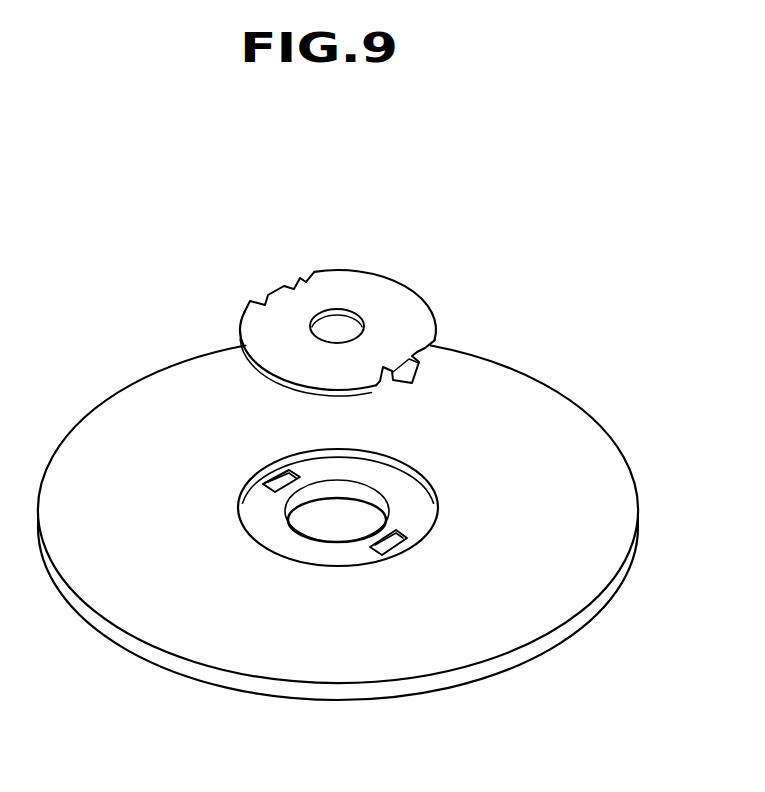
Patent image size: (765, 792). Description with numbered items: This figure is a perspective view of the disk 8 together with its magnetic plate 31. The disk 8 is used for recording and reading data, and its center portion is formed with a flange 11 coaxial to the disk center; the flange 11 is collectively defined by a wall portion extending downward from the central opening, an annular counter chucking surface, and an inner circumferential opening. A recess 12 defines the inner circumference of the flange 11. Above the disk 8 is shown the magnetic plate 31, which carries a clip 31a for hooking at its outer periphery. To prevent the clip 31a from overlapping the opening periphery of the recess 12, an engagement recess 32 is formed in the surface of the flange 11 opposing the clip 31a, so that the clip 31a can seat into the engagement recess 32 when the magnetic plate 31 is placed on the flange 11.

The disk 8 is at (614, 424).
The flange 11 is at (405, 488).
The recess 12 is at (275, 537).
The magnetic plate 31 is at (422, 274).
The clip 31a is at (263, 301).
The engagement recess 32 is at (272, 474).